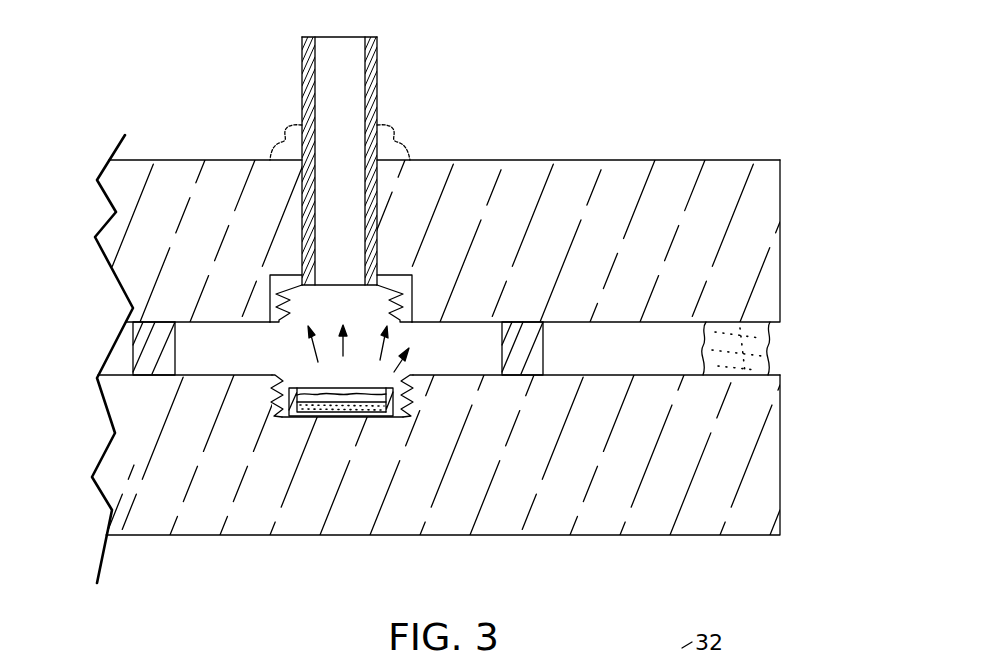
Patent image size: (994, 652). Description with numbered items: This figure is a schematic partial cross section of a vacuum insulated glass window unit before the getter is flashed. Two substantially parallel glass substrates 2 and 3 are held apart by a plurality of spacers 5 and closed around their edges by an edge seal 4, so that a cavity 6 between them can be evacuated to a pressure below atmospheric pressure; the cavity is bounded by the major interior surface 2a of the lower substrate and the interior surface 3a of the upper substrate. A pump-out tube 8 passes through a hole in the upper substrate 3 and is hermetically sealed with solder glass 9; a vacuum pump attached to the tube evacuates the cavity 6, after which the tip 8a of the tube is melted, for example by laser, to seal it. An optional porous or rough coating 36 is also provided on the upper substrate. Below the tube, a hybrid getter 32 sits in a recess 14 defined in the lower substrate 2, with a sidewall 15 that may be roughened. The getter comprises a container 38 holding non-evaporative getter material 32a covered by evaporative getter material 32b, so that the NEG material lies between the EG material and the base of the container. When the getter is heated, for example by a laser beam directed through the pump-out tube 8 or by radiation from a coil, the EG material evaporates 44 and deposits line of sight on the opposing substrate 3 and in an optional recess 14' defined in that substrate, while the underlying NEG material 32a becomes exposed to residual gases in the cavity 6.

The glass substrate 2 is at (760, 445).
The major interior surface of substrate 2 2a is at (472, 378).
The glass substrate 3 is at (763, 228).
The interior surface of glass substrate 3 3a is at (607, 322).
The edge seal 4 is at (760, 353).
The spacers 5 is at (142, 355).
The cavity 6 is at (215, 359).
The pump-out tube 8 is at (377, 85).
The tip of the pump-out tube 8a is at (309, 36).
The solder glass 9 is at (290, 143).
The recess 14 is at (325, 376).
The recess 14' is at (370, 218).
The sidewall of the recess 15 is at (272, 390).
The hybrid getter 32 is at (355, 430).
The non-evaporative getter material 32a is at (330, 412).
The evaporative getter material 32b is at (313, 393).
The porous/rough coating 36 is at (413, 275).
The container 38 is at (392, 406).
The evaporation of EG material 44 is at (407, 370).